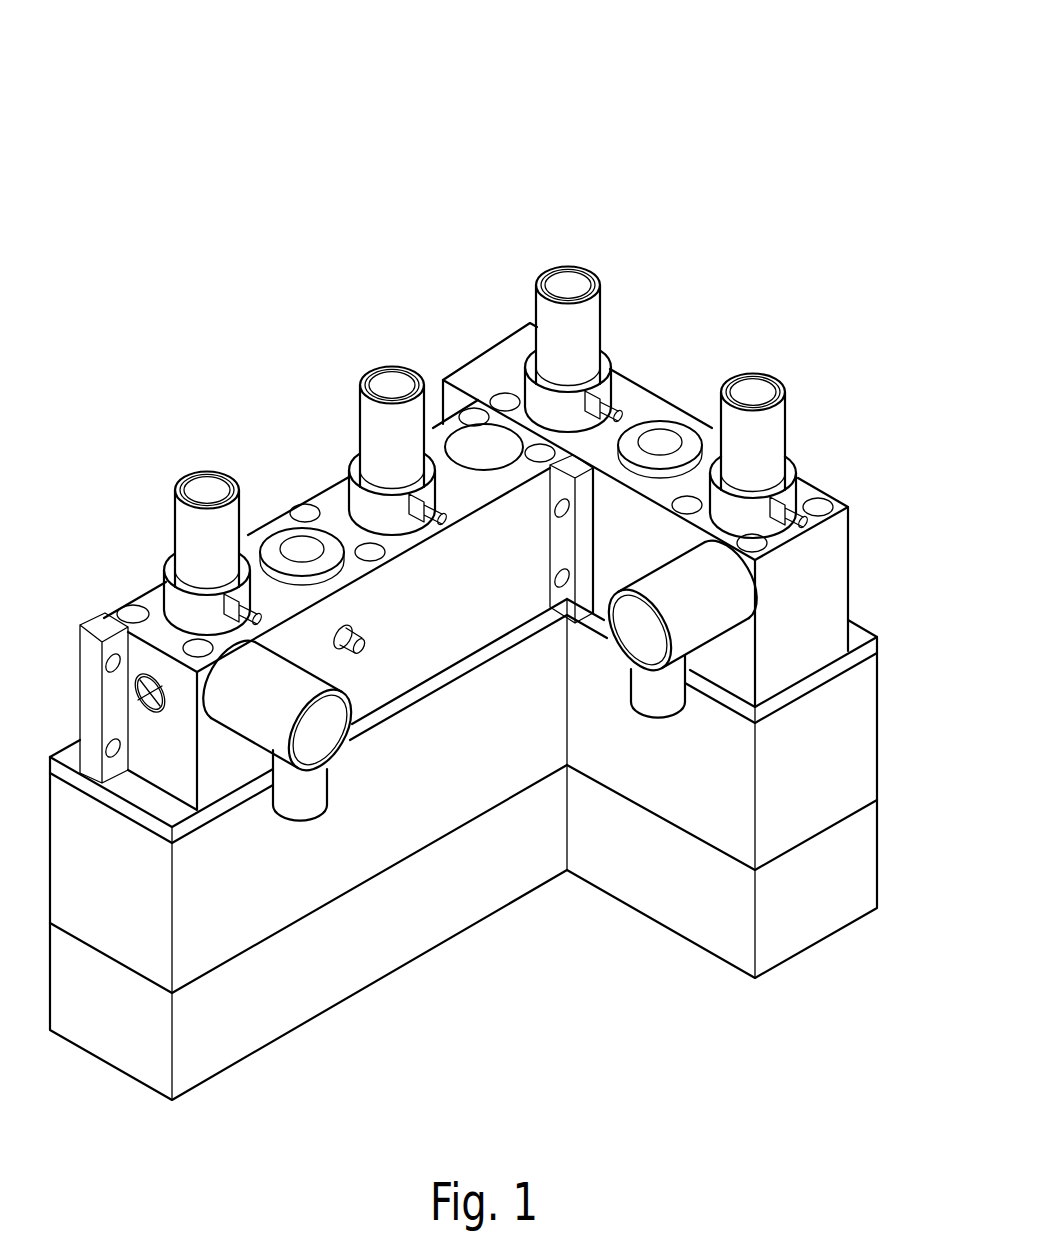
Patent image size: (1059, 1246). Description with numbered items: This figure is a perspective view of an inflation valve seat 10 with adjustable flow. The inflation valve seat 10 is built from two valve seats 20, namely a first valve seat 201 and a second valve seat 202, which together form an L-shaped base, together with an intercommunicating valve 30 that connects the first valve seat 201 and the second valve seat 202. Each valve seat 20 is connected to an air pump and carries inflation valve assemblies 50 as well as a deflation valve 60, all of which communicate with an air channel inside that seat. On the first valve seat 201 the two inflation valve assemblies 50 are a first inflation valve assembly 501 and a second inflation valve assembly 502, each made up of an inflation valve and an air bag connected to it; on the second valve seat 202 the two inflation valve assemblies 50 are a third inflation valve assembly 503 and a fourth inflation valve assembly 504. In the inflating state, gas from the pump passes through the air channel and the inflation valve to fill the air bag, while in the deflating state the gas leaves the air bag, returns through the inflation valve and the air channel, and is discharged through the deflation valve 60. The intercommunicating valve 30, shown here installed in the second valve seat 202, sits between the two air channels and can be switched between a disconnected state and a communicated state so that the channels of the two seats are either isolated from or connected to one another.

The inflation valve seat 10 is at (803, 40).
The valve seat 20 is at (638, 1003).
The first valve seat 201 is at (685, 925).
The second valve seat 202 is at (452, 923).
The intercommunicating valve 30 is at (478, 436).
The inflation valve assembly 50 is at (747, 190).
The first inflation valve assembly 501 is at (735, 374).
The second inflation valve assembly 502 is at (568, 266).
The third inflation valve assembly 503 is at (393, 366).
The fourth inflation valve assembly 504 is at (222, 474).
The deflation valve 60 is at (283, 512).